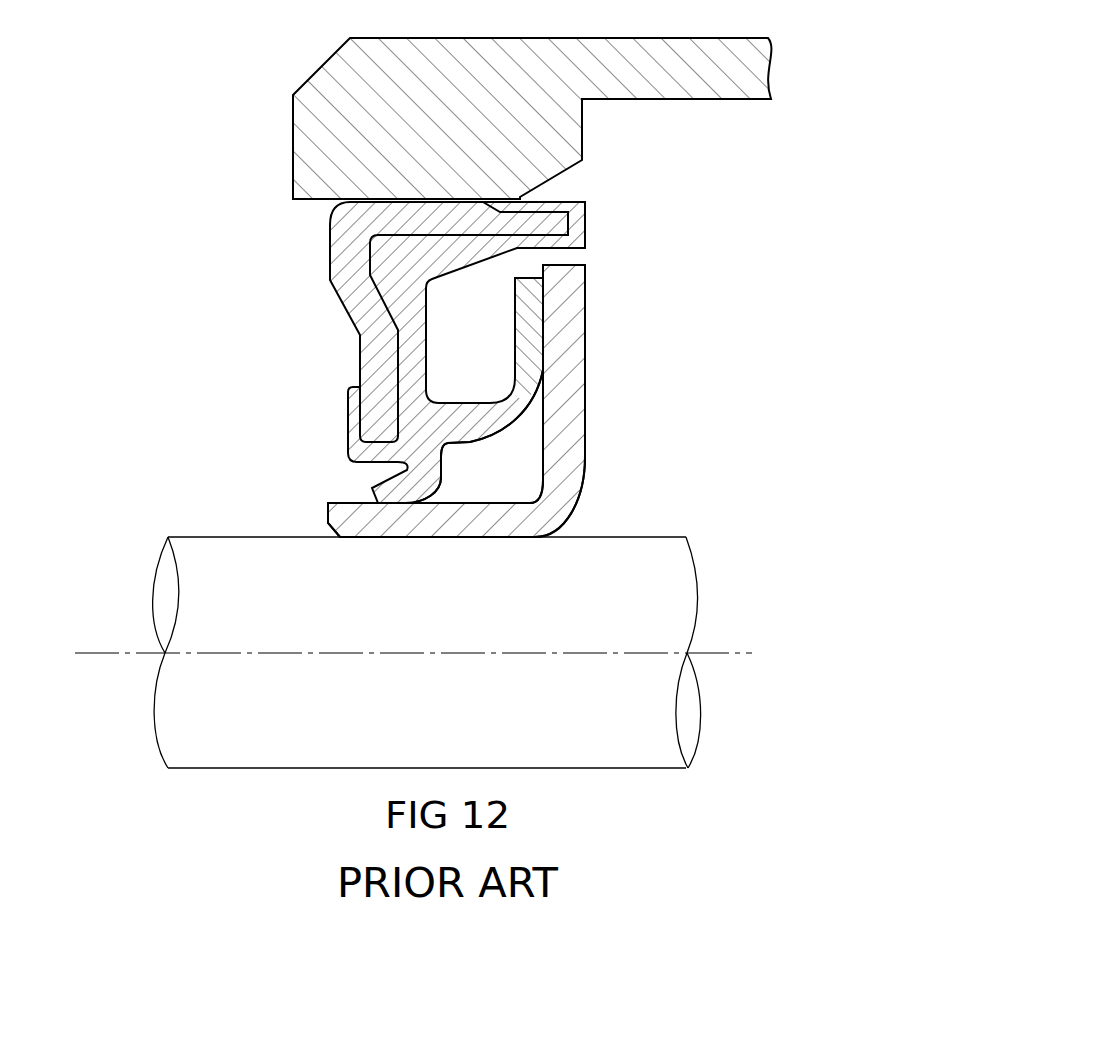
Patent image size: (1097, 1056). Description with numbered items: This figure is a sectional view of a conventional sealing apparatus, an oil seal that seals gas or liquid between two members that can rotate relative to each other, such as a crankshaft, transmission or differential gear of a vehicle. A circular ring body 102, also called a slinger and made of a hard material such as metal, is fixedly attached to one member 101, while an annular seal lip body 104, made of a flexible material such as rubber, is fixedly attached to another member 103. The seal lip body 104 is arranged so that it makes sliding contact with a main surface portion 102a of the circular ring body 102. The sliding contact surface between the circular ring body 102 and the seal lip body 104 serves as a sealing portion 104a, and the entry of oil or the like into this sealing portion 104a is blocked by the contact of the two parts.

The one member 101 is at (632, 537).
The circular ring body 102 is at (570, 324).
The main surface portion 102a is at (540, 451).
The another member 103 is at (608, 97).
The seal lip body 104 is at (535, 366).
The sealing portion 104a is at (560, 291).